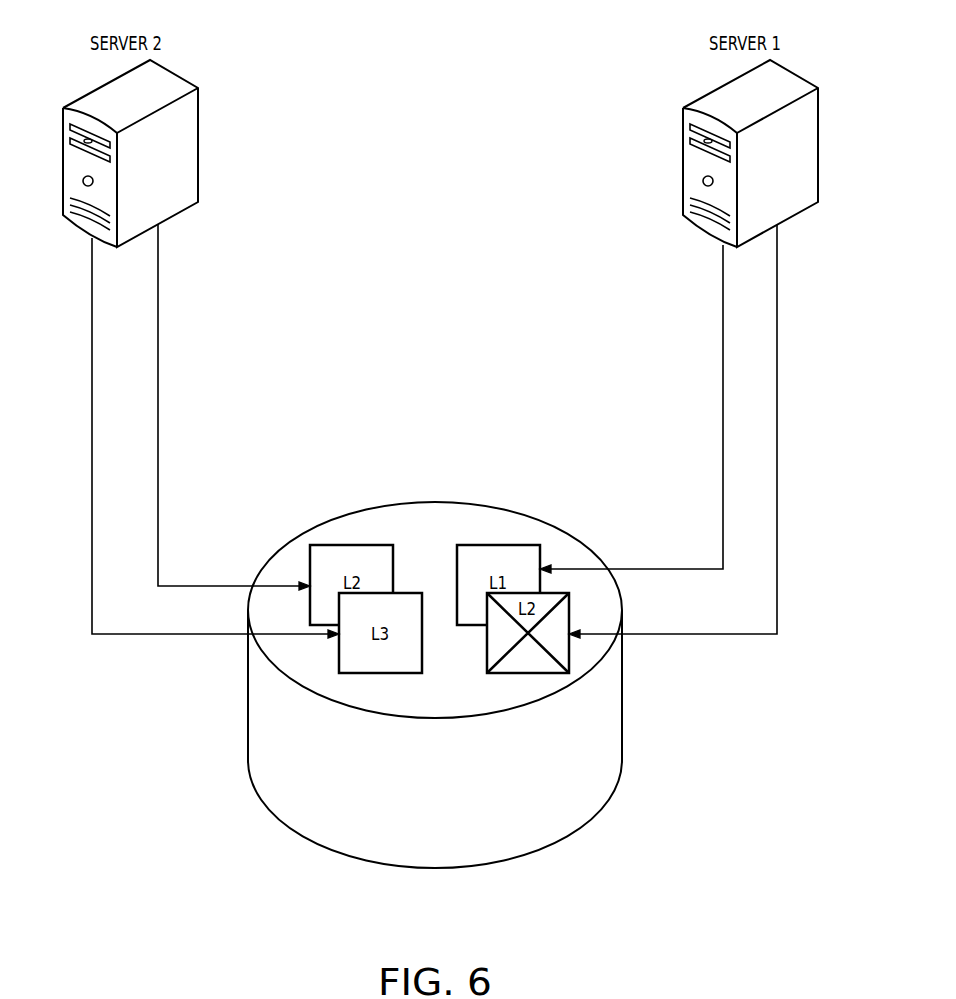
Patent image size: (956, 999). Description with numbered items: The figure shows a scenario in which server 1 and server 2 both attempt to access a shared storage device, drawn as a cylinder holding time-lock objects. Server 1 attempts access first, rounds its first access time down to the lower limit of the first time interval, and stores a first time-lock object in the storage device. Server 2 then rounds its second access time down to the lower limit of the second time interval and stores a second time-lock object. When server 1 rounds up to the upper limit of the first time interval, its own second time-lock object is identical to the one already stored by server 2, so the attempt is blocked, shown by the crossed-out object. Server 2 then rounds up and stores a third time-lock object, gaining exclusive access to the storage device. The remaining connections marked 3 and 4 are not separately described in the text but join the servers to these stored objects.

The server 1 is at (723, 490).
The server 2 is at (158, 490).
The link from server 1 to L2 3 is at (777, 490).
The link from server 2 to L3 4 is at (93, 490).